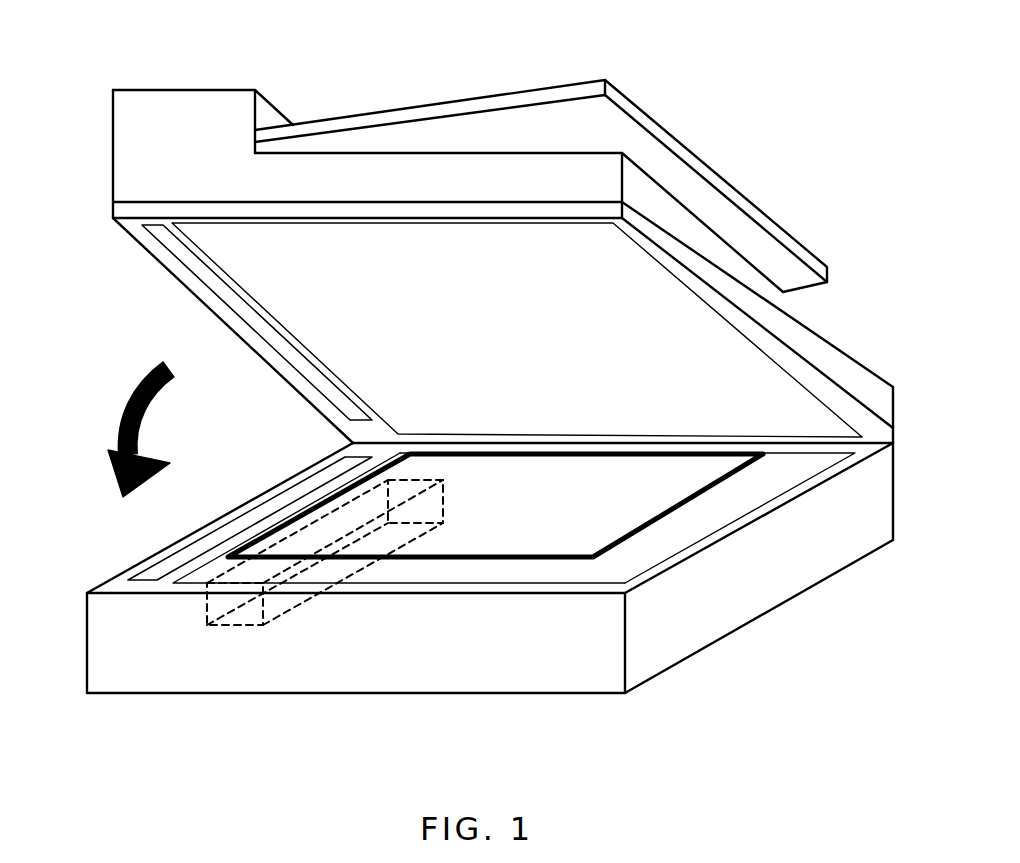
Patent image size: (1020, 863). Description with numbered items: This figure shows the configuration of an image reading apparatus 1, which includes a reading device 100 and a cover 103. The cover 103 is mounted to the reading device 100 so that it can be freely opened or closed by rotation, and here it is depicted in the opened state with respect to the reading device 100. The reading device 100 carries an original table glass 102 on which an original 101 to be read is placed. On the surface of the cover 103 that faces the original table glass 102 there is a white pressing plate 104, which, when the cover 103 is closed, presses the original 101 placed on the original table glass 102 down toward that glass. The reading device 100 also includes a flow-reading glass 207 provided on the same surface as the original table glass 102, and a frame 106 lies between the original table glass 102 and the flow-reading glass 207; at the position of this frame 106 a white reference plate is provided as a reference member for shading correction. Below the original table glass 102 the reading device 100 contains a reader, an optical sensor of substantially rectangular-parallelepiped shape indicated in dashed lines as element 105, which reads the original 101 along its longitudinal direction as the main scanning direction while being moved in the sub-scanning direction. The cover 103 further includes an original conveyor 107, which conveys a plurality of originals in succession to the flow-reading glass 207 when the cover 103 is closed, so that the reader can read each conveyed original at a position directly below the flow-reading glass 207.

The image reading apparatus 1 is at (719, 86).
The reading device 100 is at (457, 662).
The original 101 is at (600, 533).
The original table glass 102 is at (765, 480).
The cover 103 is at (113, 205).
The pressing plate 104 is at (225, 257).
The reading unit (dashed) 105 is at (317, 572).
The frame 106 is at (187, 570).
The original conveyor 107 is at (113, 118).
The flow-reading glass 207 is at (157, 570).